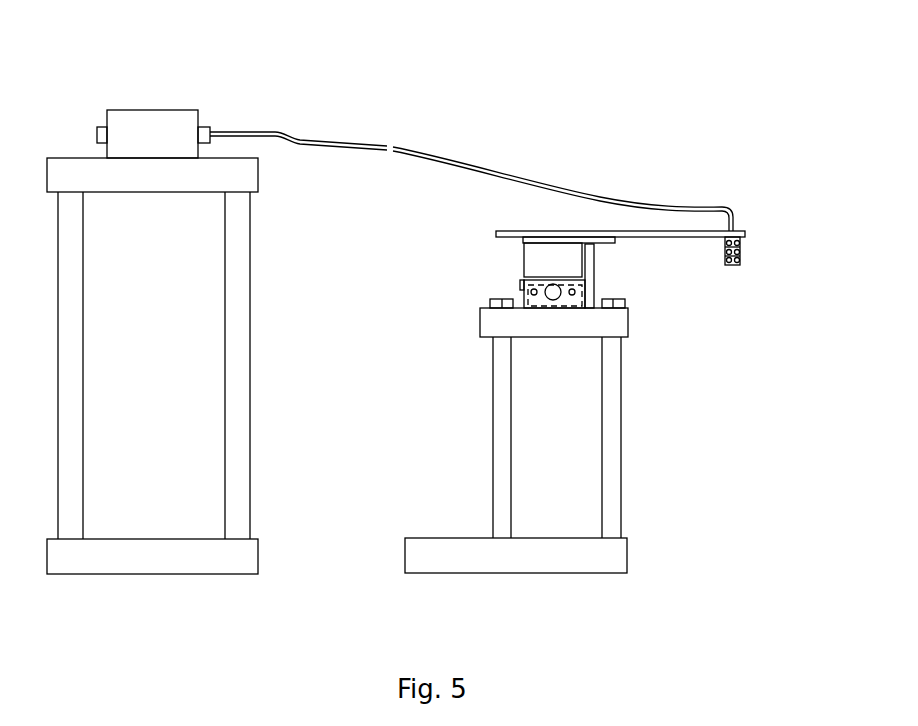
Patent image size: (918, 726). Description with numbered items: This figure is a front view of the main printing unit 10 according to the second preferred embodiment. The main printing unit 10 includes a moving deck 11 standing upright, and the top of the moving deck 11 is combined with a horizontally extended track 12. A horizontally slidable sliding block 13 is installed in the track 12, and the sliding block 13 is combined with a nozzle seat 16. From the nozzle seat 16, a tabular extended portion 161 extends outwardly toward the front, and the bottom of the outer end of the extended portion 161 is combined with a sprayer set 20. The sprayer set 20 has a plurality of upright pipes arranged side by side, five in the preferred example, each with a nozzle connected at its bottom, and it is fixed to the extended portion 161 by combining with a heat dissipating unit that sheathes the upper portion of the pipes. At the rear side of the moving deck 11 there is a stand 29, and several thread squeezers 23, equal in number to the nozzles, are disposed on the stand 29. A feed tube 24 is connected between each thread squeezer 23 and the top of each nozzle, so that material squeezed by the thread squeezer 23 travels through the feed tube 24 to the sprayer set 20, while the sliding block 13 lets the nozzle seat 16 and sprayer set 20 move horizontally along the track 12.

The main printing unit 10 is at (495, 446).
The moving deck 11 is at (615, 555).
The track 12 is at (588, 303).
The sliding block 13 is at (520, 283).
The nozzle seat 16 is at (620, 249).
The extended portion 161 is at (659, 238).
The sprayer set 20 is at (765, 276).
The thread squeezer 23 is at (156, 118).
The feed tube 24 is at (445, 152).
The stand 29 is at (240, 499).